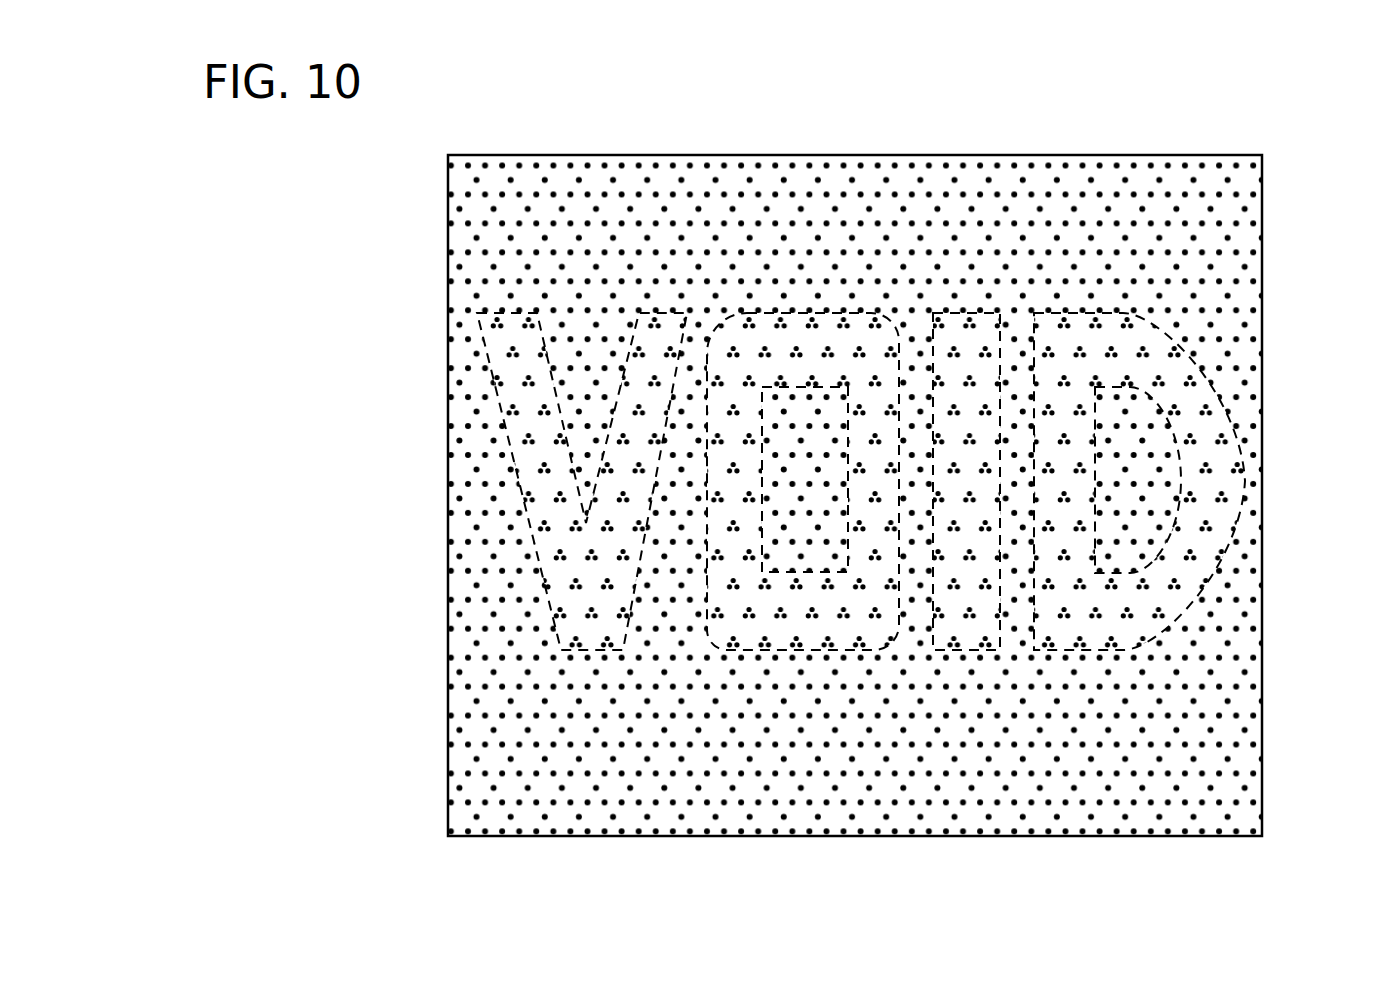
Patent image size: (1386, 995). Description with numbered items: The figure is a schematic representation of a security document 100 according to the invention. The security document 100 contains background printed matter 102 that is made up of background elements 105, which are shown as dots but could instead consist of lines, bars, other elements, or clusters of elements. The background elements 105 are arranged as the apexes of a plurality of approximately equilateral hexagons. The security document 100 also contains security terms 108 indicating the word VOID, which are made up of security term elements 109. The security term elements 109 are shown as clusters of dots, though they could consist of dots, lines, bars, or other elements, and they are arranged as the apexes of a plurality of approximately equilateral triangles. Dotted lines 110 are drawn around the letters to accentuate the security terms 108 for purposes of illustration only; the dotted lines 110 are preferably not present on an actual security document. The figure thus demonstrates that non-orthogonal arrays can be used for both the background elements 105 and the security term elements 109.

The security document 100 is at (392, 235).
The background printed matter 102 is at (513, 672).
The background elements 105 is at (553, 802).
The security terms 108 is at (1213, 423).
The security term elements 109 is at (1188, 612).
The dotted lines 110 is at (498, 407).